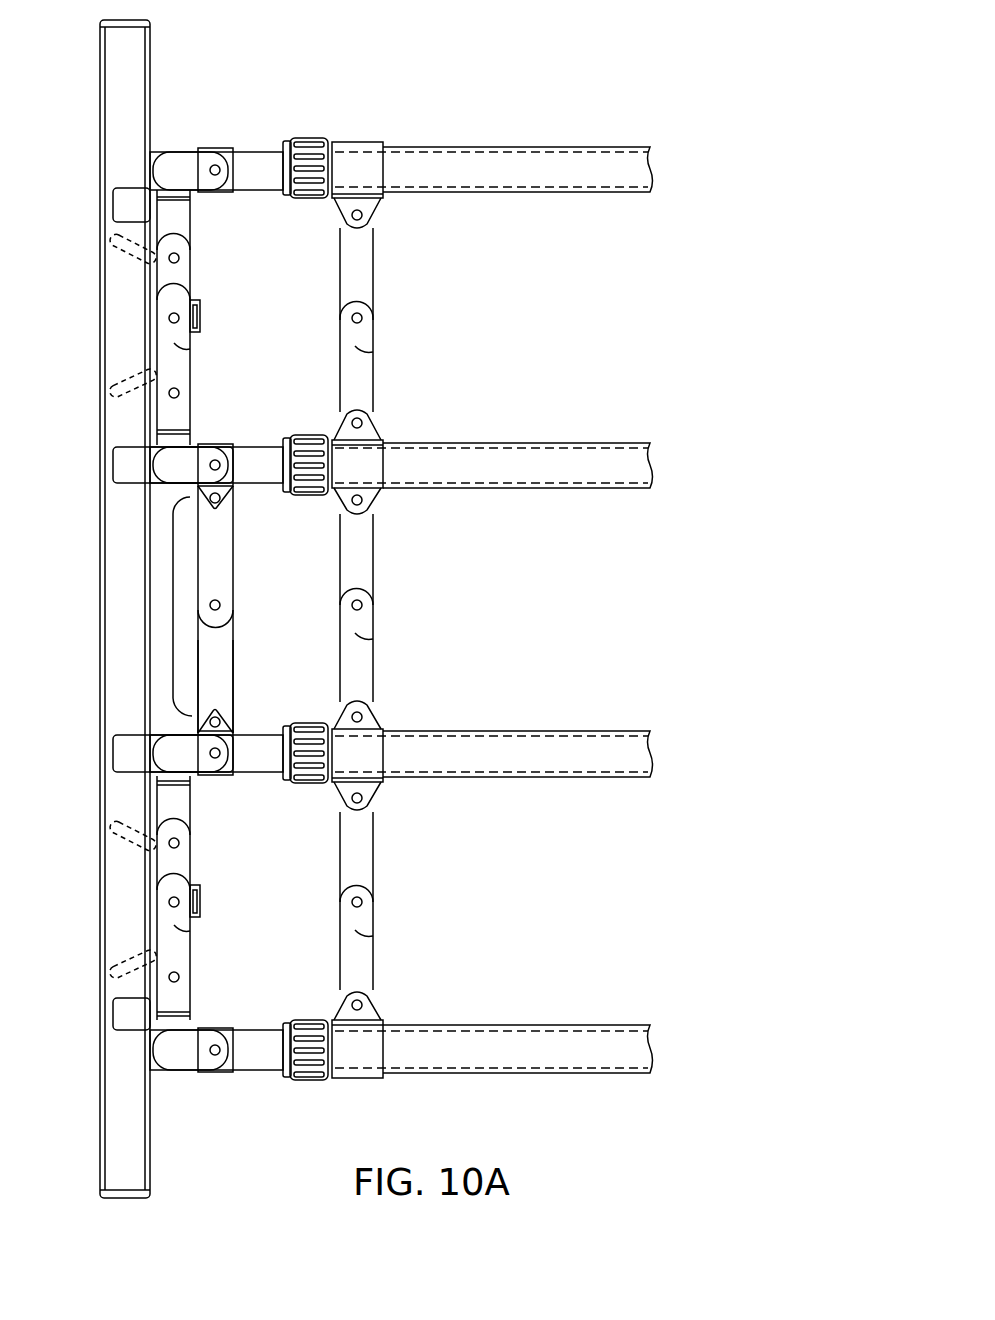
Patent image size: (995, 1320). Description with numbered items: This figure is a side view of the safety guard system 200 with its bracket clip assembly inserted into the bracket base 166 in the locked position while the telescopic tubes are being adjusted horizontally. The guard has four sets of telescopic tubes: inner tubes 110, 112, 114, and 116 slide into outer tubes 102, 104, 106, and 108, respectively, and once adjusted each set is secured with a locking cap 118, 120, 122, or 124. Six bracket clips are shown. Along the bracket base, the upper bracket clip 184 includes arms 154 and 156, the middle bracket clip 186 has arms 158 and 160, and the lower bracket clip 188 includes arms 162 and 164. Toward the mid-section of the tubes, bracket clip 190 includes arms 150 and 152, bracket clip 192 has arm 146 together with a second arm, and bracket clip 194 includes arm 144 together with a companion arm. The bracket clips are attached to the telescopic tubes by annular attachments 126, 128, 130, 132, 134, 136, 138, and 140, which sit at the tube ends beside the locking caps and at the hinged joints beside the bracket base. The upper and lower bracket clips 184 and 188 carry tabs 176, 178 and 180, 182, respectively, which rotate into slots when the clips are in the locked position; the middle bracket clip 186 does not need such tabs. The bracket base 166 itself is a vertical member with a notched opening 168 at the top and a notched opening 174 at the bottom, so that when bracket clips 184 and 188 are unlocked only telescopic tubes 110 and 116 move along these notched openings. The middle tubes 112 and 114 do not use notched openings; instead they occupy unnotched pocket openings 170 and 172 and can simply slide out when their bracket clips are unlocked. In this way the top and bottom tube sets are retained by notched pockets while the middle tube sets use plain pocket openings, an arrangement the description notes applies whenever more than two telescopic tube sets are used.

The outer tube 102 is at (475, 147).
The outer tube 104 is at (532, 489).
The outer tube 106 is at (537, 778).
The outer tube 108 is at (472, 1075).
The inner tube 110 is at (257, 150).
The inner tube 112 is at (258, 447).
The inner tube 114 is at (255, 735).
The inner tube 116 is at (258, 1058).
The locking cap 118 is at (309, 140).
The locking cap 120 is at (306, 436).
The locking cap 122 is at (300, 784).
The locking cap 124 is at (305, 1082).
The annular attachment 126 is at (363, 148).
The annular attachment 128 is at (370, 458).
The annular attachment 130 is at (372, 746).
The annular attachment 132 is at (356, 1050).
The annular attachment 134 is at (218, 150).
The annular attachment 136 is at (222, 443).
The annular attachment 138 is at (196, 772).
The annular attachment 140 is at (218, 1072).
The arm 144 is at (387, 357).
The arm 146 is at (365, 542).
The arm 150 is at (362, 840).
The arm 152 is at (388, 938).
The arm 154 is at (178, 220).
The arm 156 is at (208, 317).
The arm 158 is at (222, 552).
The arm 160 is at (222, 668).
The arm 162 is at (178, 806).
The arm 164 is at (208, 928).
The bracket base 166 is at (122, 28).
The notched opening 168 is at (128, 206).
The pocket opening 170 is at (128, 466).
The pocket opening 172 is at (128, 753).
The notched opening 174 is at (128, 1019).
The tab 176 is at (140, 238).
The tab 178 is at (140, 388).
The tab 180 is at (140, 826).
The tab 182 is at (140, 968).
The bracket clip 184 is at (239, 317).
The bracket clip 186 is at (172, 607).
The bracket clip 188 is at (238, 898).
The bracket clip 190 is at (422, 899).
The bracket clip 192 is at (425, 601).
The bracket clip 194 is at (421, 315).
The safety guard system 200 is at (664, 1148).